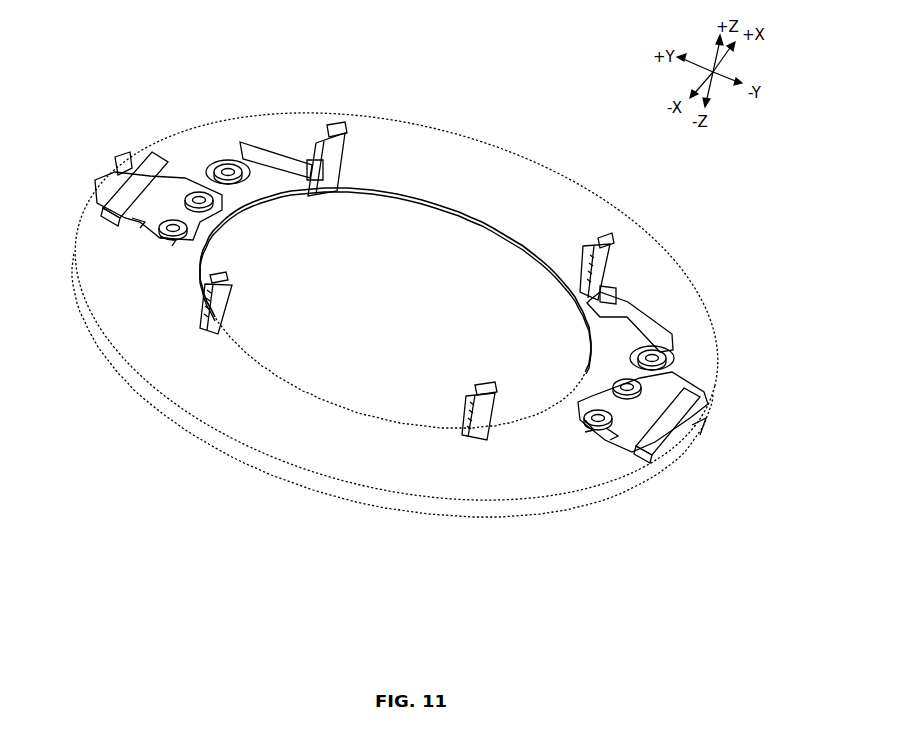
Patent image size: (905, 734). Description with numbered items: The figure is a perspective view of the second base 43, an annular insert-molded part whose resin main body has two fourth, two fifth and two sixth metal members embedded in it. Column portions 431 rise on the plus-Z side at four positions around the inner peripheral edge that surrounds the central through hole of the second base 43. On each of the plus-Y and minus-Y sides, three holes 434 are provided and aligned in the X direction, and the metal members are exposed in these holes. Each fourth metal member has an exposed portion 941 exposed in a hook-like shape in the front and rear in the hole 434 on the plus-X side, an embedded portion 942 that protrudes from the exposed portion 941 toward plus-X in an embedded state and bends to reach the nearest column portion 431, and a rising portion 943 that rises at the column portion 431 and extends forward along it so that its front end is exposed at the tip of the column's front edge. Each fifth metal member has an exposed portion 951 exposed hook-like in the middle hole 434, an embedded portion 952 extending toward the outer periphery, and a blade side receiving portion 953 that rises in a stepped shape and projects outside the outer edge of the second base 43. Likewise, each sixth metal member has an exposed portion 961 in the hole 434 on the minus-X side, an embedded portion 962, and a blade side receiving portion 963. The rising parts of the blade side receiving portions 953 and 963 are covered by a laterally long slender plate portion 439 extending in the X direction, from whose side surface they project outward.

The second base 43 is at (307, 487).
The column portion 431 is at (332, 192).
The hole 434 is at (150, 226).
The slender plate portion 439 is at (130, 180).
The exposed portion 941 is at (228, 158).
The embedded portion 942 is at (290, 165).
The rising portion 943 is at (337, 127).
The exposed portion 951 is at (203, 193).
The embedded portion 952 is at (175, 183).
The blade side receiving portion 953 is at (137, 155).
The exposed portion 961 is at (160, 230).
The embedded portion 962 is at (137, 223).
The blade side receiving portion 963 is at (100, 185).